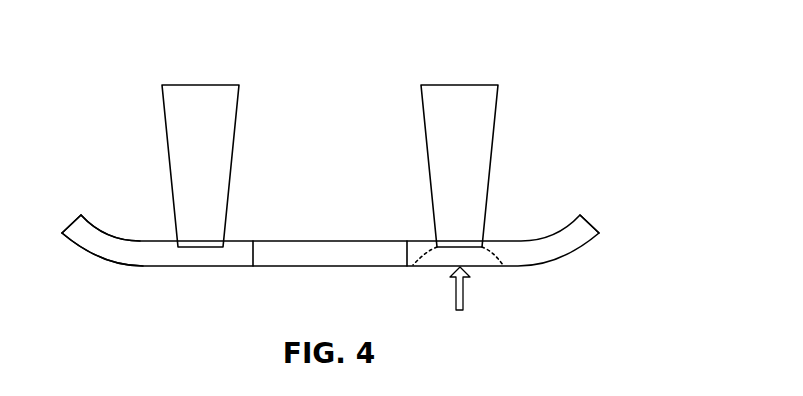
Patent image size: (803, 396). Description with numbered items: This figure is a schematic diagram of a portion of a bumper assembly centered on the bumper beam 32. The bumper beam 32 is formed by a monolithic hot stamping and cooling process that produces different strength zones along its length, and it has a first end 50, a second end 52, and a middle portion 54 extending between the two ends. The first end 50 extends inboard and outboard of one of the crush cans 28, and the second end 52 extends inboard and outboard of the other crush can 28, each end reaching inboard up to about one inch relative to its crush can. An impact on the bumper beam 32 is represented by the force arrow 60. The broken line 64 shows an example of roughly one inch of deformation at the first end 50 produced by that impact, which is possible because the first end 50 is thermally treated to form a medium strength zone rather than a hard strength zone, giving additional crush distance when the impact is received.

The crush can 28 is at (177, 123).
The bumper beam 32 is at (577, 260).
The first end 50 is at (568, 232).
The second end 52 is at (115, 250).
The middle portion 54 is at (284, 252).
The force arrow 60 is at (464, 292).
The broken line 64 is at (424, 252).